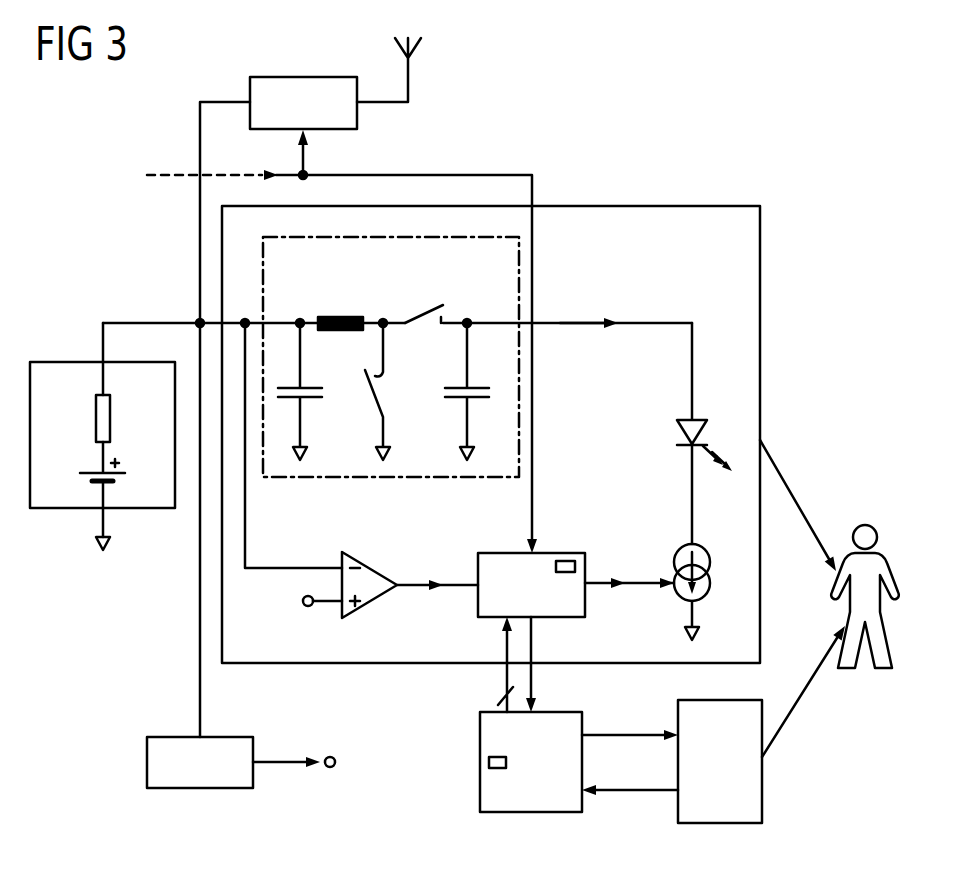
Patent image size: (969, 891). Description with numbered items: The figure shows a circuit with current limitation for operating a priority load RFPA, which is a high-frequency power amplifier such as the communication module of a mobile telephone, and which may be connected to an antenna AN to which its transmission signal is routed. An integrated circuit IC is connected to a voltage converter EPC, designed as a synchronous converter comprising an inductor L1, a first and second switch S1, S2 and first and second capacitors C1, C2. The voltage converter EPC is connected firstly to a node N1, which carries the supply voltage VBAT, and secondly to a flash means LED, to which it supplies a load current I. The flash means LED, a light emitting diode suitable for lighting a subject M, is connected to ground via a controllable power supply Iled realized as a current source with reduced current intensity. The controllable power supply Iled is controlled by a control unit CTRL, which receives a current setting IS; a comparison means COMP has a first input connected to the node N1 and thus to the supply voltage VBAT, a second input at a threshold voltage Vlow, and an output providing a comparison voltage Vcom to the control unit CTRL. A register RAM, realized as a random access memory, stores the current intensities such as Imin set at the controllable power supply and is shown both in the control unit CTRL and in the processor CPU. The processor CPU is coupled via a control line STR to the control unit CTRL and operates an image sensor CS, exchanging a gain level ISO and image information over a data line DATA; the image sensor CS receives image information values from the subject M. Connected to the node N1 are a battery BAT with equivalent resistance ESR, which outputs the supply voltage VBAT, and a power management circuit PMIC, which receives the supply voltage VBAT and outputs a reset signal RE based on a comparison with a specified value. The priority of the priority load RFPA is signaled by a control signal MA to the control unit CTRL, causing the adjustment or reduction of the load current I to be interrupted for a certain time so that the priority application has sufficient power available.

The antenna AN is at (418, 50).
The priority load RFPA is at (357, 118).
The control signal MA is at (361, 341).
The integrated circuit IC is at (645, 206).
The voltage converter EPC is at (519, 266).
The node N1 is at (200, 322).
The supply voltage VBAT is at (397, 307).
The inductor L1 is at (342, 315).
The first switch S1 is at (372, 385).
The second switch S2 is at (426, 308).
The first capacitor C1 is at (308, 399).
The second capacitor C2 is at (478, 399).
The load current I is at (589, 307).
The flash means LED is at (678, 432).
The equivalent resistance ESR is at (73, 418).
The battery BAT is at (67, 510).
The control unit CTRL is at (482, 552).
The register RAM is at (575, 560).
The comparison means COMP is at (372, 607).
The threshold voltage Vlow is at (289, 604).
The comparison voltage Vcom is at (437, 571).
The current setting signal IS is at (629, 565).
The controllable power supply Iled is at (672, 600).
The current intensity Imin is at (555, 664).
The control line STR is at (480, 664).
The processor CPU is at (543, 812).
The control line for transmitting a gain level ISO is at (630, 721).
The data line DATA is at (630, 806).
The sensor CS is at (763, 790).
The subject M is at (867, 525).
The power management circuit PMIC is at (147, 760).
The reset signal RE is at (294, 744).